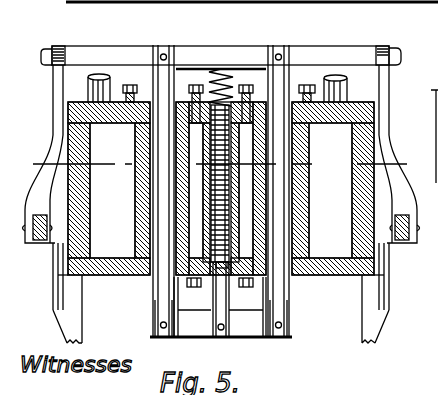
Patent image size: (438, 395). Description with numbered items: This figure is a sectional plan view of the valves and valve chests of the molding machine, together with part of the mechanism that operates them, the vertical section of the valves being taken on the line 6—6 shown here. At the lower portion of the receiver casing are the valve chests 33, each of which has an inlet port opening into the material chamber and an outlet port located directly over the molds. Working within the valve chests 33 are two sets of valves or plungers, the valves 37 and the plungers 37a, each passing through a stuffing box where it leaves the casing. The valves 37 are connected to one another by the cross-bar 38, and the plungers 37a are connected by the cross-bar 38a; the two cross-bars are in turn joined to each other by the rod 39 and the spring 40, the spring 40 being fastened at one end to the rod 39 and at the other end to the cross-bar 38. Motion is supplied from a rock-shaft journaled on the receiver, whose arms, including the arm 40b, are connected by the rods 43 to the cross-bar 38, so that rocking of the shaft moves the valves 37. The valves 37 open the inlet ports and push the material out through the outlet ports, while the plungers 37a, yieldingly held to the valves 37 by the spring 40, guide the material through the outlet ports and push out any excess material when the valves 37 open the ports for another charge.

The section line 6 is at (215, 189).
The valve chests 33 is at (293, 185).
The valves or plungers 37 is at (166, 45).
The plungers 37a is at (163, 307).
The cross-bar 38 is at (352, 52).
The cross-bar 38a is at (253, 328).
The rod 39 is at (221, 305).
The spring 40 is at (219, 70).
The arm 40b is at (418, 136).
The rods 43 is at (55, 113).